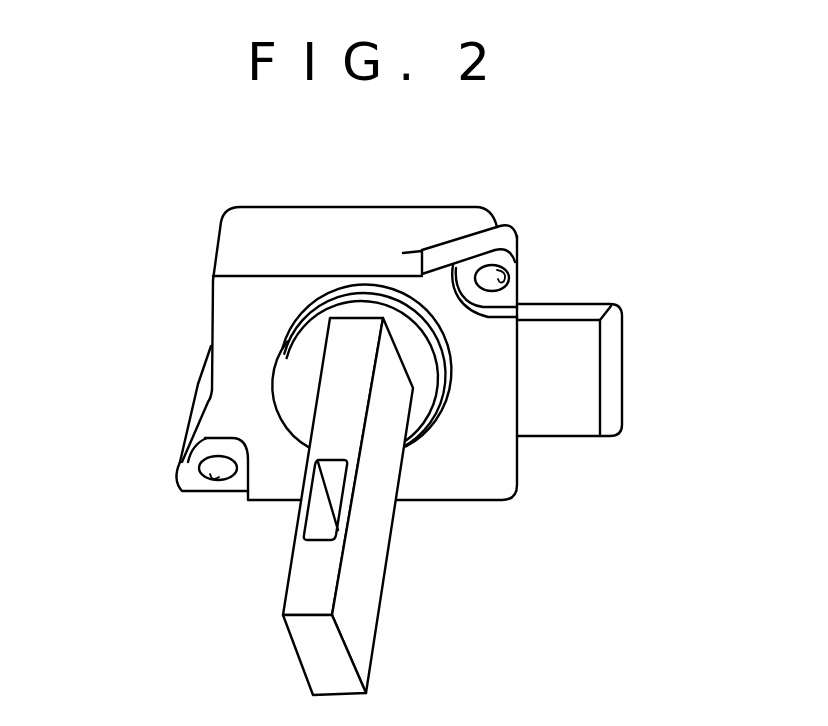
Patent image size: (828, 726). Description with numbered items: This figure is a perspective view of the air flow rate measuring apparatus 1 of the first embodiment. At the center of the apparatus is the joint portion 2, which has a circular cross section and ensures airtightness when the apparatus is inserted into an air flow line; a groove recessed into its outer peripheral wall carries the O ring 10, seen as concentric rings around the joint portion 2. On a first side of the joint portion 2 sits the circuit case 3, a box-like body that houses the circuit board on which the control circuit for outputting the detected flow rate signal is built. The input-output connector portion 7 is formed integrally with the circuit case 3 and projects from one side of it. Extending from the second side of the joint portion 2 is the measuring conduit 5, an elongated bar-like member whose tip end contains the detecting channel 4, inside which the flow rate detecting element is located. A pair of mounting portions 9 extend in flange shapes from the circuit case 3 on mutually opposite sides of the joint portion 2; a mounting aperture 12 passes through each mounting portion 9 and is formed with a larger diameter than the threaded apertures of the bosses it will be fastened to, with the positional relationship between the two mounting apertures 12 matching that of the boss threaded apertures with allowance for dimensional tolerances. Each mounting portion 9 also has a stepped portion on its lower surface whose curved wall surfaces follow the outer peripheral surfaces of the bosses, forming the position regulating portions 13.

The air flow rate measuring apparatus 1 is at (171, 194).
The joint portion 2 is at (286, 370).
The circuit case 3 is at (216, 258).
The detecting channel 4 is at (316, 523).
The measuring conduit 5 is at (378, 571).
The input-output connector portion 7 is at (569, 422).
The mounting portions 9 is at (181, 418).
The O ring 10 is at (313, 313).
The mounting aperture 12 is at (203, 476).
The position regulating portions 13 is at (190, 458).